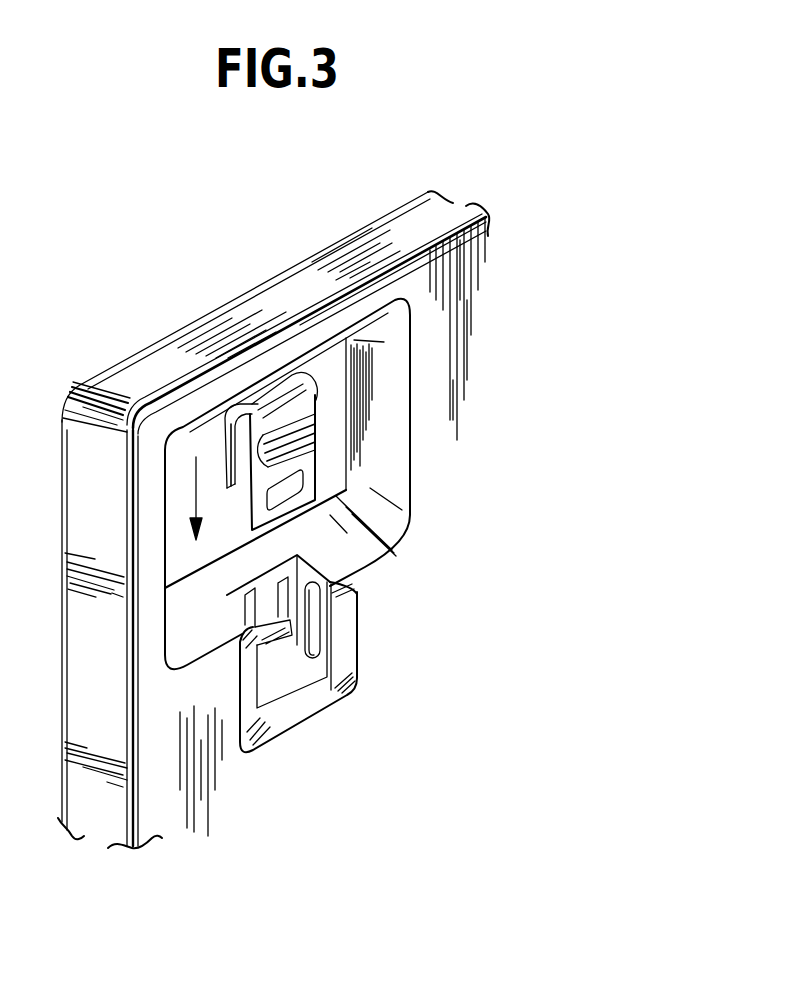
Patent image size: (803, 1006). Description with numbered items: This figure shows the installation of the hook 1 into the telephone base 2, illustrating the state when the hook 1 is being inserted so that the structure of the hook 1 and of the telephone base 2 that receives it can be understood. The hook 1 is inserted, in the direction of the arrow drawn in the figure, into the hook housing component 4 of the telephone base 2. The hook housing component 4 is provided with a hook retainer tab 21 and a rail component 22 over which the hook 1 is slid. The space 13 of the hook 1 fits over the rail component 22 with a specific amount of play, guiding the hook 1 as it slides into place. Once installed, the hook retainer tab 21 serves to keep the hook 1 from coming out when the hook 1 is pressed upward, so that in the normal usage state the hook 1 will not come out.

The hook 1 is at (196, 402).
The telephone base 2 is at (227, 318).
The hook housing component 4 is at (291, 666).
The space 13 is at (237, 472).
The hook retainer tab 21 is at (240, 658).
The rail component 22 is at (320, 617).